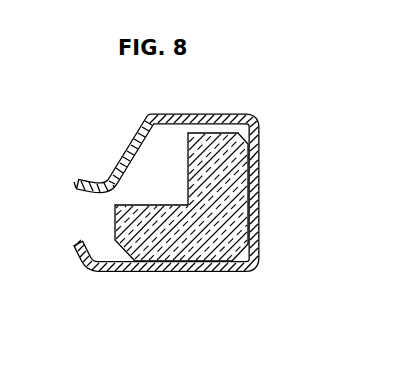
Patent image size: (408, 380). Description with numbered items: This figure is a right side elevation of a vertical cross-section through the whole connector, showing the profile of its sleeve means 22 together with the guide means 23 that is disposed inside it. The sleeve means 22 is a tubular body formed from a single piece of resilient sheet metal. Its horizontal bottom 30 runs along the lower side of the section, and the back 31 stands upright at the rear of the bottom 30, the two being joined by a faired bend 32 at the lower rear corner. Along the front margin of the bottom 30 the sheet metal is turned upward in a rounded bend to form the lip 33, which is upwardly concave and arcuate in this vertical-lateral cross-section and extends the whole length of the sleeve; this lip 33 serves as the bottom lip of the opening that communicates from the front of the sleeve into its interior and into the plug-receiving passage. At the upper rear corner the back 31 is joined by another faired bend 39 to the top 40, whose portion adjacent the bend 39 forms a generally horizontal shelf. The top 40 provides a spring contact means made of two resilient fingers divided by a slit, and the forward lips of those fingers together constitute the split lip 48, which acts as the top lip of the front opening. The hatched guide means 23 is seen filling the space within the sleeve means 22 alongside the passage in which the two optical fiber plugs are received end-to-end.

The sleeve means 22 is at (307, 172).
The guide means 23 is at (187, 218).
The bottom 30 is at (172, 272).
The back 31 is at (262, 212).
The faired bend 32 is at (256, 266).
The lip 33 is at (75, 240).
The faired bend 39 is at (261, 123).
The top 40 is at (250, 104).
The split lip 48 is at (103, 178).